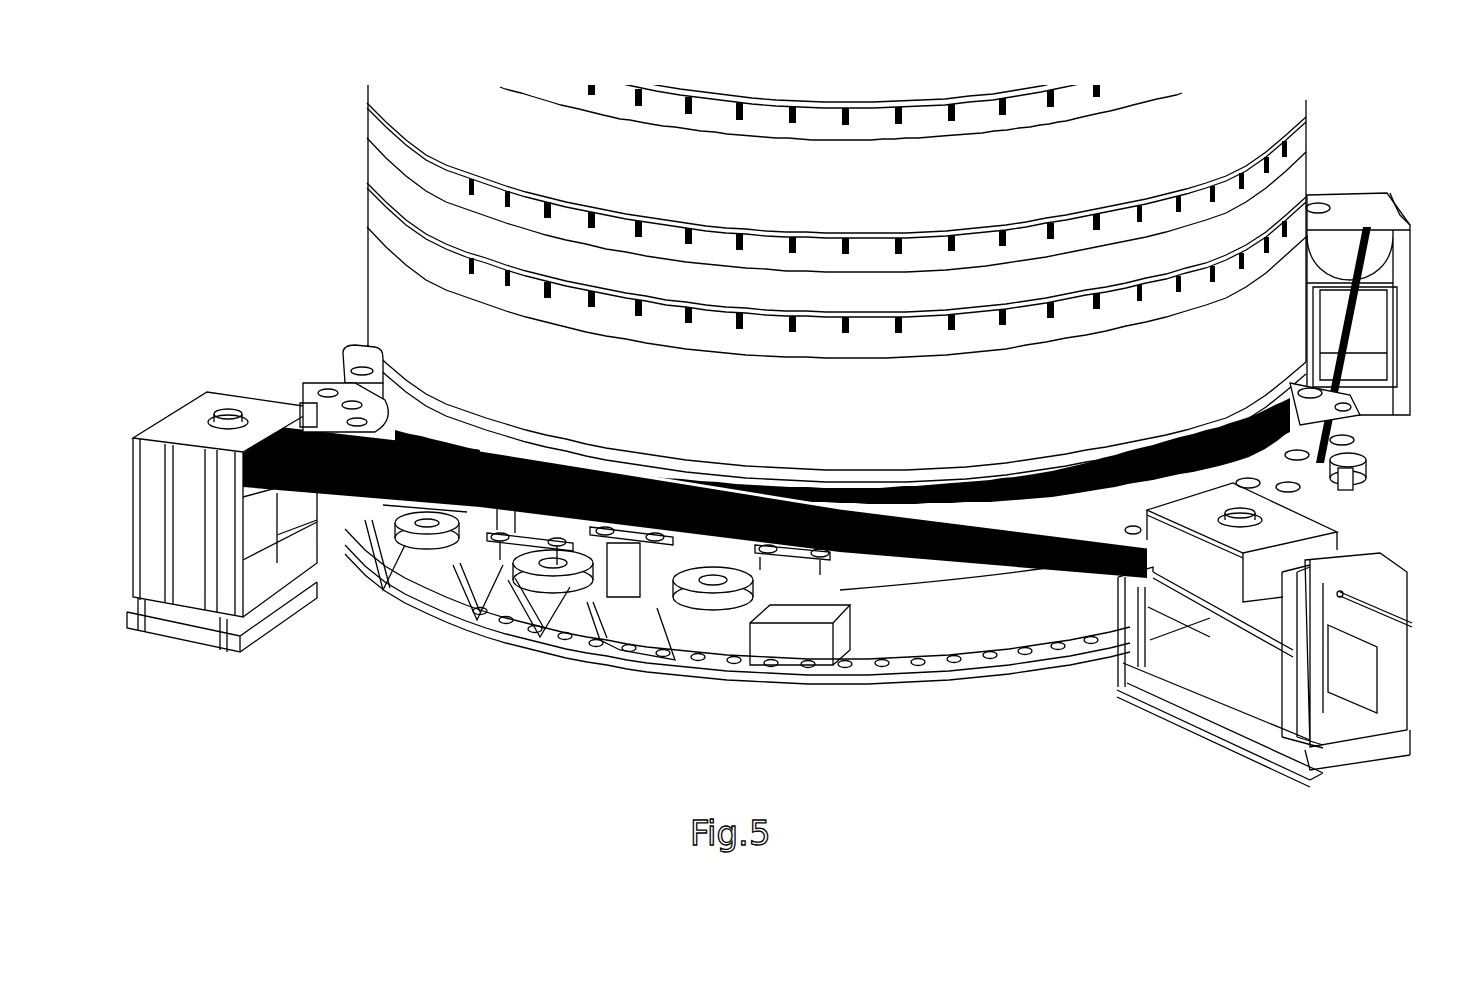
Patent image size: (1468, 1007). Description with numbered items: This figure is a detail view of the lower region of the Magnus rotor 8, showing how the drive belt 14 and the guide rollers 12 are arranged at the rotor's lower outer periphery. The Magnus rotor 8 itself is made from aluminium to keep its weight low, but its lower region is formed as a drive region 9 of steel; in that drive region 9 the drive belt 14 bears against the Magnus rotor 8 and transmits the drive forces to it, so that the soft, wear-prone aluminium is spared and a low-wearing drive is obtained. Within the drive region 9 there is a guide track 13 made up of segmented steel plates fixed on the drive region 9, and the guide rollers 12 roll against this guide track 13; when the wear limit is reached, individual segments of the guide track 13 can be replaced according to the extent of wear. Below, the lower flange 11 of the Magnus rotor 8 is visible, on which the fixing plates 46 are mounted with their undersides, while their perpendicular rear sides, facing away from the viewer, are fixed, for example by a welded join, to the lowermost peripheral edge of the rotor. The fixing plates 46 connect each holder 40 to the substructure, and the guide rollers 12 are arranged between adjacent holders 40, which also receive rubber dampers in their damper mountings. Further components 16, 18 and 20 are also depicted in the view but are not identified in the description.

The Magnus rotor 8 is at (1068, 176).
The drive region 9 is at (410, 420).
The lower flange 11 is at (873, 676).
The guide rollers 12 is at (400, 528).
The guide track 13 is at (920, 570).
The drive belt 14 is at (1070, 470).
The drive unit 16 is at (1343, 210).
The left tensioning unit 18 is at (275, 443).
The right tensioning unit 20 is at (1257, 587).
The holder 40 is at (634, 590).
The fixing plates 46 is at (440, 580).